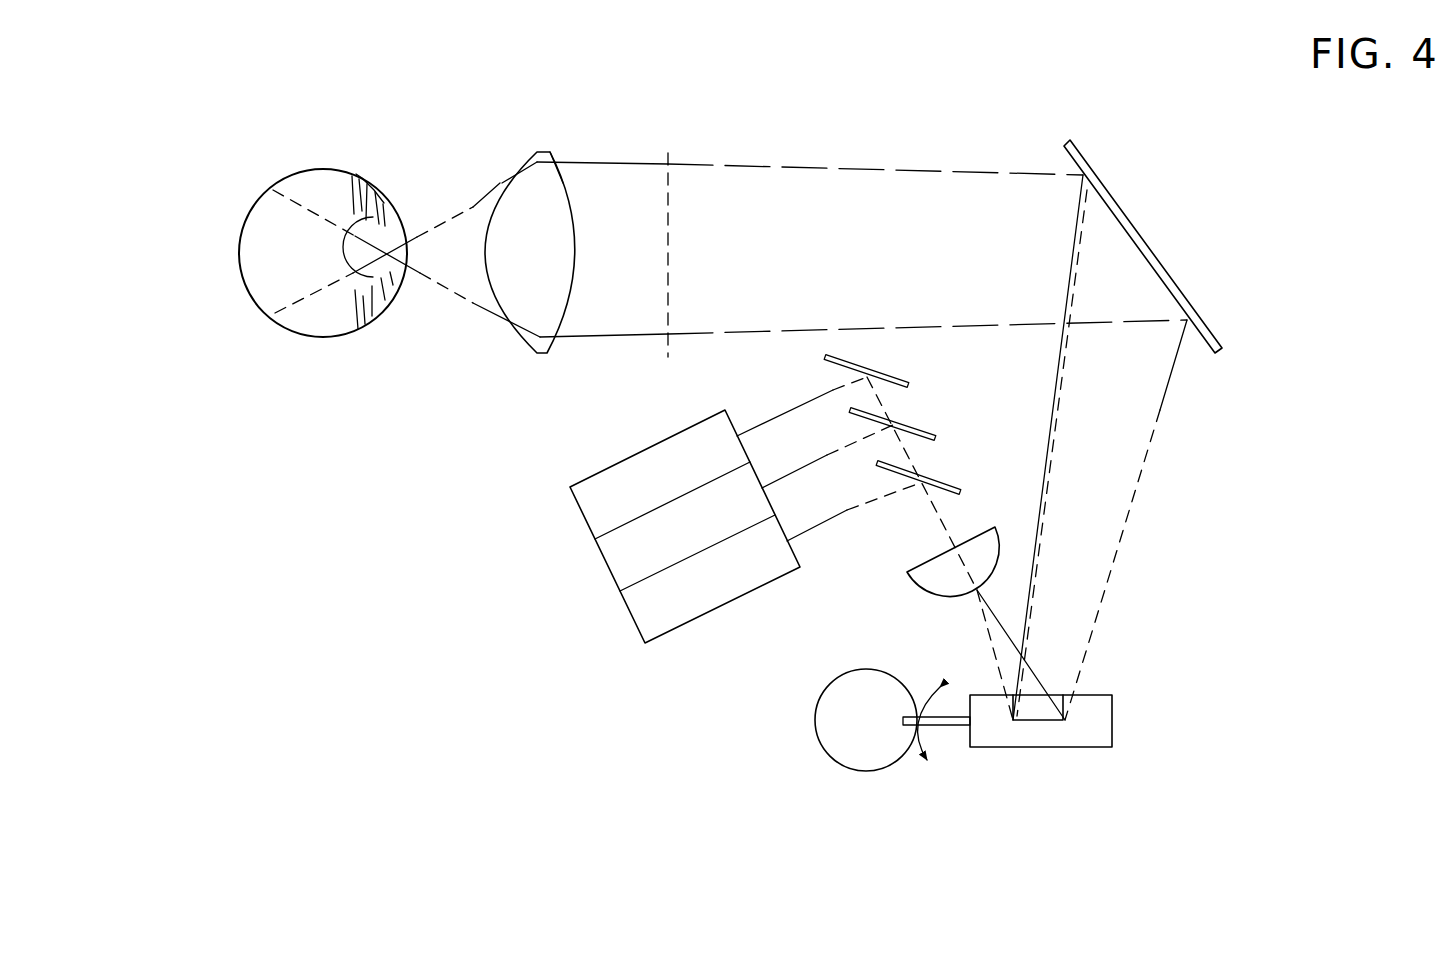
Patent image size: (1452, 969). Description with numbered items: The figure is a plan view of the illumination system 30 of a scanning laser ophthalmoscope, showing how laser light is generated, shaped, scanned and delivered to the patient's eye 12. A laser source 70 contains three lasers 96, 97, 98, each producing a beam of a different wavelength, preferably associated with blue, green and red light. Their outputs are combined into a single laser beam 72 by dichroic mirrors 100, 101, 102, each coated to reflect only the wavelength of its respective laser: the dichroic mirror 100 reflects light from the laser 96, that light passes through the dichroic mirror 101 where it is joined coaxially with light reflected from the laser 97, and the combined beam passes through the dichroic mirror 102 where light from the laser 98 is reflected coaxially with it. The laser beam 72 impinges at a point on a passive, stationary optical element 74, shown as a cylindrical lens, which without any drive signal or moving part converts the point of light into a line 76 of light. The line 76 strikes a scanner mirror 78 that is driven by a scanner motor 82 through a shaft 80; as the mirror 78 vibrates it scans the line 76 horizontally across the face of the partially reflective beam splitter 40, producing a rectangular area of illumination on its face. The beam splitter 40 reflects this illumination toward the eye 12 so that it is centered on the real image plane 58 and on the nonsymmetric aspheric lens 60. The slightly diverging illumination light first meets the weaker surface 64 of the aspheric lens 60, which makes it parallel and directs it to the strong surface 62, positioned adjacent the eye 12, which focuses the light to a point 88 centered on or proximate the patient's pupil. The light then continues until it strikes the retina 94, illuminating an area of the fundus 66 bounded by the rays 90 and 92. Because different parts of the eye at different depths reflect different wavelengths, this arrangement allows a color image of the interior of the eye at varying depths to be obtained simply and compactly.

The patient's eye 12 is at (320, 337).
The illumination system 30 is at (1179, 700).
The beam splitter 40 is at (1175, 268).
The real image plane 58 is at (671, 152).
The aspheric lens 60 is at (541, 360).
The strong surface 62 is at (498, 181).
The weaker surface 64 is at (566, 181).
The fundus 66 is at (253, 243).
The laser source 70 is at (776, 603).
The laser beam 72 is at (926, 516).
The passive stationary optical element 74 is at (1006, 563).
The line of light 76 is at (1049, 726).
The scanner mirror 78 is at (1110, 756).
The shaft 80 is at (950, 731).
The scanner motor 82 is at (867, 775).
The focus point 88 is at (395, 284).
The ray 90 is at (275, 187).
The ray 92 is at (275, 332).
The retina 94 is at (248, 300).
The laser 96 is at (573, 527).
The laser 97 is at (606, 580).
The laser 98 is at (632, 636).
The dichroic mirror 100 is at (892, 379).
The dichroic mirror 101 is at (926, 432).
The dichroic mirror 102 is at (949, 481).